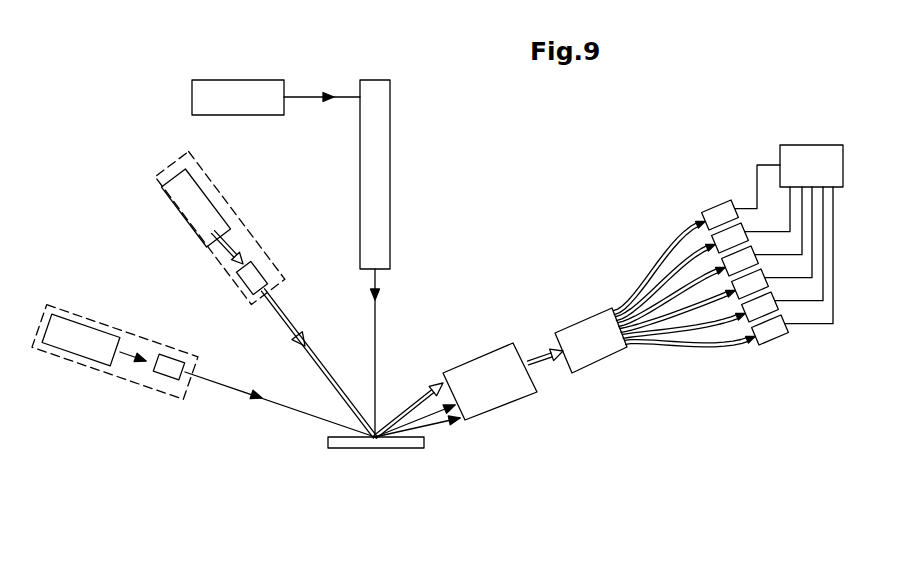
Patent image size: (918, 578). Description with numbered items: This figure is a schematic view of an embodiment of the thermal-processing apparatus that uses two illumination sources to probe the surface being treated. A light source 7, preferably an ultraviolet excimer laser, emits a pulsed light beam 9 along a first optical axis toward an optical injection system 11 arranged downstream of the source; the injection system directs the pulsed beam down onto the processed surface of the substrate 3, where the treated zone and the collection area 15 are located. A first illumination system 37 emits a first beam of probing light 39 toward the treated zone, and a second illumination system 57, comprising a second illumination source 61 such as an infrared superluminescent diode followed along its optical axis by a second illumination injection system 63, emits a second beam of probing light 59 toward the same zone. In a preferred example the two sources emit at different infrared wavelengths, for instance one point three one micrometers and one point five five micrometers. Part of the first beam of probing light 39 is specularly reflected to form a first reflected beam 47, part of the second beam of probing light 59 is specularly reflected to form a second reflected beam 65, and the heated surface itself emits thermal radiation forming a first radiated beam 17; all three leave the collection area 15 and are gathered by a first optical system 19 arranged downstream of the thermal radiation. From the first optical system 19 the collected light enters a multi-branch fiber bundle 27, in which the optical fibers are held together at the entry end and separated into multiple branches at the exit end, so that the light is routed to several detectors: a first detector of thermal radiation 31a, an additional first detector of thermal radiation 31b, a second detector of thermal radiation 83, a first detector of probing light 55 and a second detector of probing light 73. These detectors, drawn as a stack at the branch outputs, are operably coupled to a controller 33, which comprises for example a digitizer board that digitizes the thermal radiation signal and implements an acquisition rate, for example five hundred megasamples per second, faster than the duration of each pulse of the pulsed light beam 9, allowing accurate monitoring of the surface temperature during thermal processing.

The light source 7 is at (228, 80).
The pulsed light beam 9 is at (298, 97).
The optical injection system 11 is at (382, 178).
The collection area 15 is at (375, 445).
The sample 3 is at (350, 445).
The first illumination system 37 is at (172, 170).
The first beam of probing light 39 is at (318, 363).
The second illumination system 57 is at (80, 313).
The second illumination source 61 is at (98, 337).
The second illumination injection system 63 is at (167, 373).
The second beam of probing light 59 is at (140, 377).
The first optical system 19 is at (485, 347).
The first reflected beam 47 is at (410, 372).
The first radiated beam 17 is at (428, 413).
The second reflected beam 65 is at (427, 417).
The multi-branch fiber bundle 27 is at (577, 337).
The second detector of thermal radiation 83 is at (740, 217).
The first detector of probing light 55 is at (742, 224).
The first detector of thermal radiation 31a is at (713, 215).
The additional first detector of thermal radiation 31b is at (770, 332).
The second detector of probing light 73 is at (757, 275).
The controller 33 is at (817, 162).